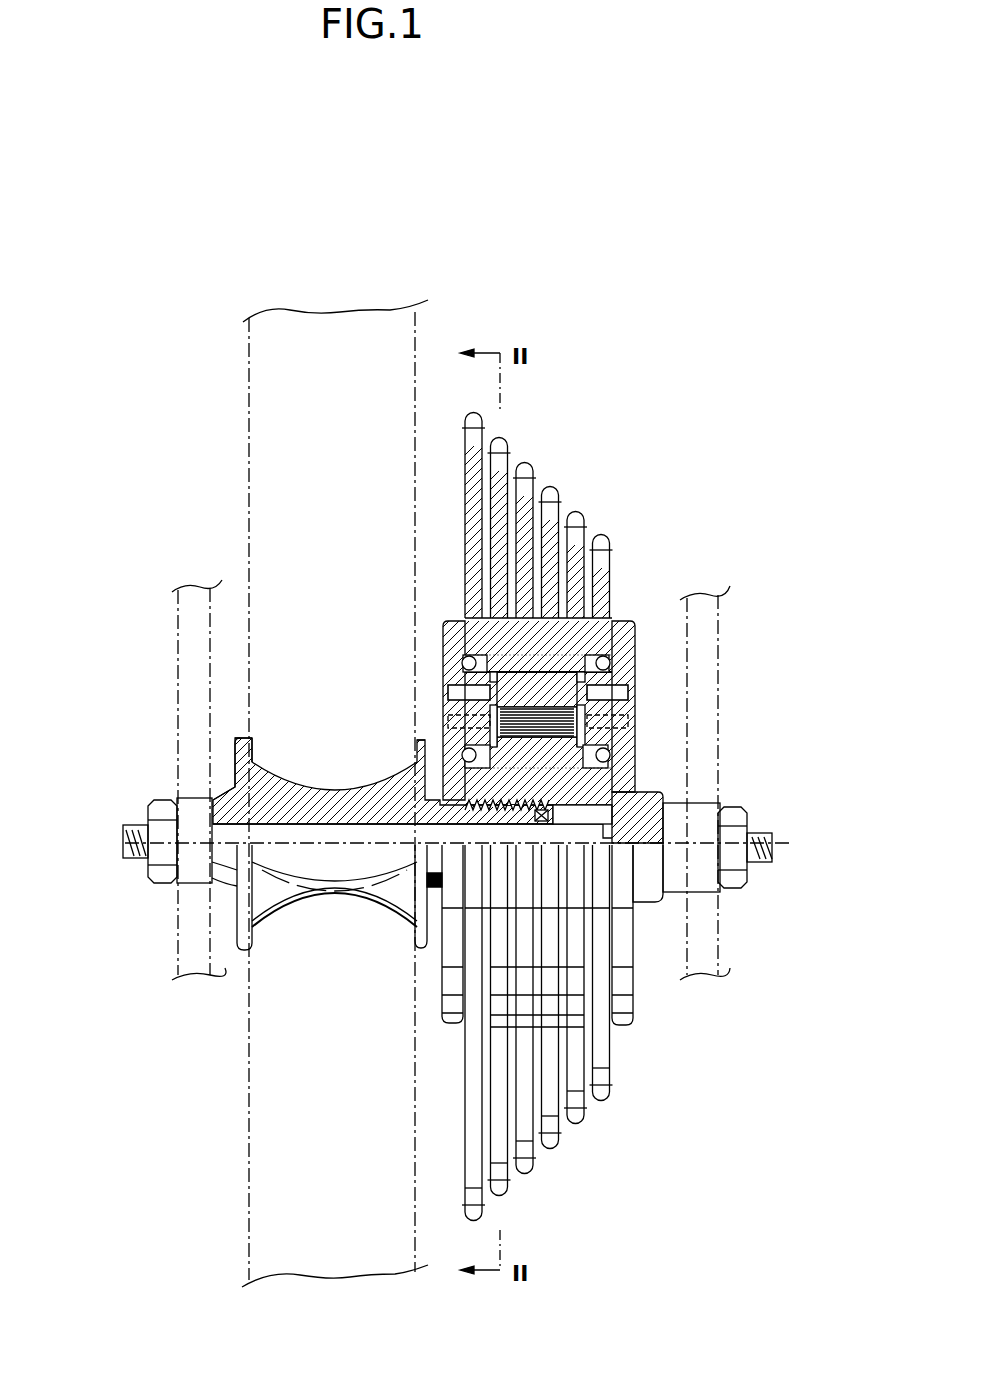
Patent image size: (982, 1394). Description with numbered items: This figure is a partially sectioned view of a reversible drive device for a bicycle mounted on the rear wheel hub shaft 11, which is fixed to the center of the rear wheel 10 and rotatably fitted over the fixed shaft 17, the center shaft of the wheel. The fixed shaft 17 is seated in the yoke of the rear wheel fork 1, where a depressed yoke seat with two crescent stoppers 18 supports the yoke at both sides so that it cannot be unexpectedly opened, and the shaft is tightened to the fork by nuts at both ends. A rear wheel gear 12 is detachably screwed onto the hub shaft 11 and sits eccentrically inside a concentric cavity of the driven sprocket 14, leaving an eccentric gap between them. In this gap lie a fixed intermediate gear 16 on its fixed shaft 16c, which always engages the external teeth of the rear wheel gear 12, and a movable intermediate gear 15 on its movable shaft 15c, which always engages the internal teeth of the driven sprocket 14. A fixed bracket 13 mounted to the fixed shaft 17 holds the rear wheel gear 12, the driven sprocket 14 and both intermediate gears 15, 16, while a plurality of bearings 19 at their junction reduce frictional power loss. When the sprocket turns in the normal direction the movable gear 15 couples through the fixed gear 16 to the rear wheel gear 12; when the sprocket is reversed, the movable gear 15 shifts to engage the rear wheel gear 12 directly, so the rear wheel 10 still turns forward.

The rear wheel fork 1 is at (178, 695).
The rear wheel 10 is at (249, 405).
The rear wheel hub shaft 11 is at (265, 742).
The rear wheel gear 12 is at (480, 775).
The fixed bracket 13 is at (443, 623).
The driven sprocket 14 is at (465, 472).
The movable intermediate gear 15 is at (612, 660).
The movable shaft 15c is at (632, 695).
The fixed intermediate gear 16 is at (612, 752).
The fixed shaft 16c is at (632, 722).
The fixed shaft 17 is at (665, 830).
The crescent stoppers 18 is at (700, 830).
The bearings 19 is at (443, 652).